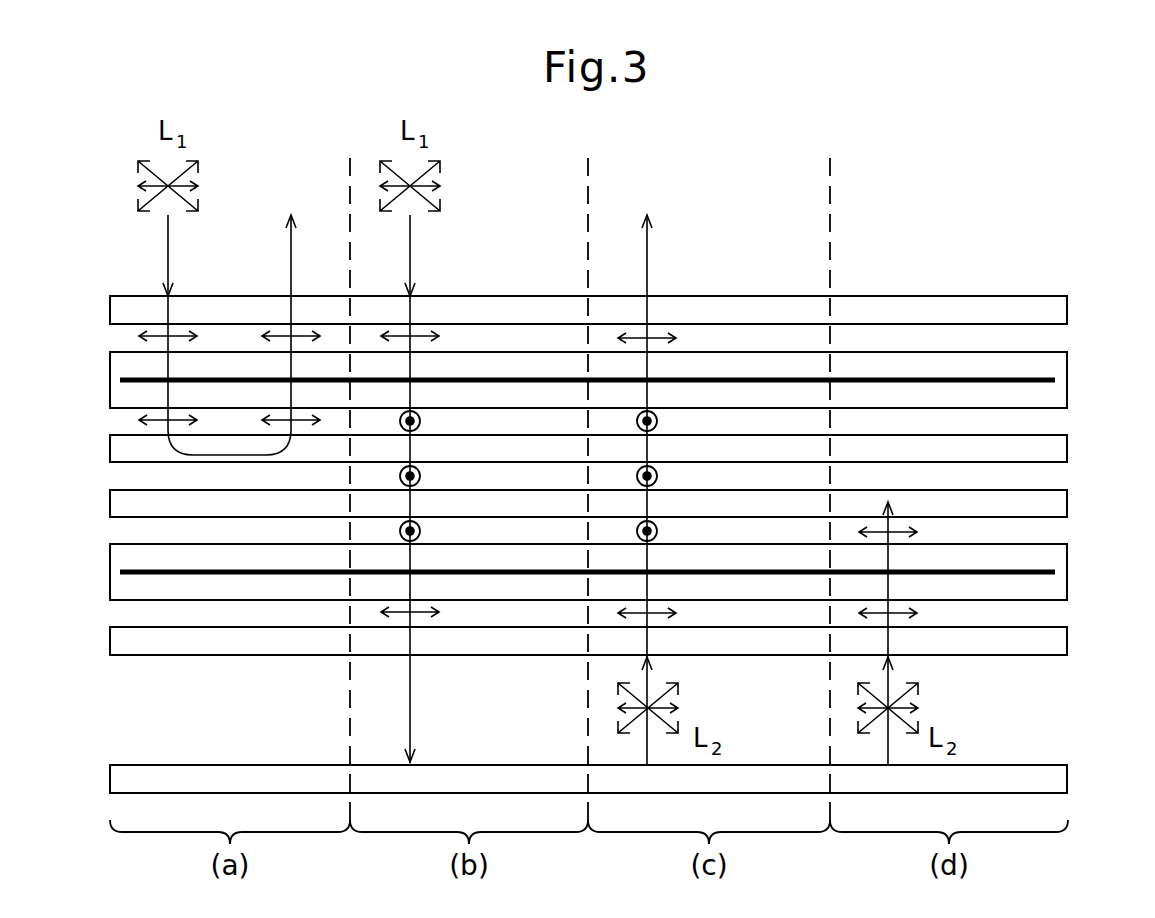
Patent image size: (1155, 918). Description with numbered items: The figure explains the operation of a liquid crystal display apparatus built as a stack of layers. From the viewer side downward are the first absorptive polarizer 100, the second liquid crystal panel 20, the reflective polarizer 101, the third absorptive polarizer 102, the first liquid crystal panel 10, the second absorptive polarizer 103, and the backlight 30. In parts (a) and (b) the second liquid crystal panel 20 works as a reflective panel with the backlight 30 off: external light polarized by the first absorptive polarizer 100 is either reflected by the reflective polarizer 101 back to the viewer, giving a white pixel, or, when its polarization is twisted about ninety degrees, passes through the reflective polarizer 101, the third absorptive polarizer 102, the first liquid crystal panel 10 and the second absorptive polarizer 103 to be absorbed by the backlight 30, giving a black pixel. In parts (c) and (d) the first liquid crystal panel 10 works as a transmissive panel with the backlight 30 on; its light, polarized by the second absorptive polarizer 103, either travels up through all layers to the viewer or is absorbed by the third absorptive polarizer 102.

The first absorptive polarizer 100 is at (632, 310).
The second liquid crystal panel 20 is at (1078, 353).
The reflective polarizer 101 is at (632, 448).
The third absorptive polarizer 102 is at (632, 503).
The first liquid crystal panel 10 is at (1078, 545).
The second absorptive polarizer 103 is at (632, 641).
The backlight 30 is at (627, 779).